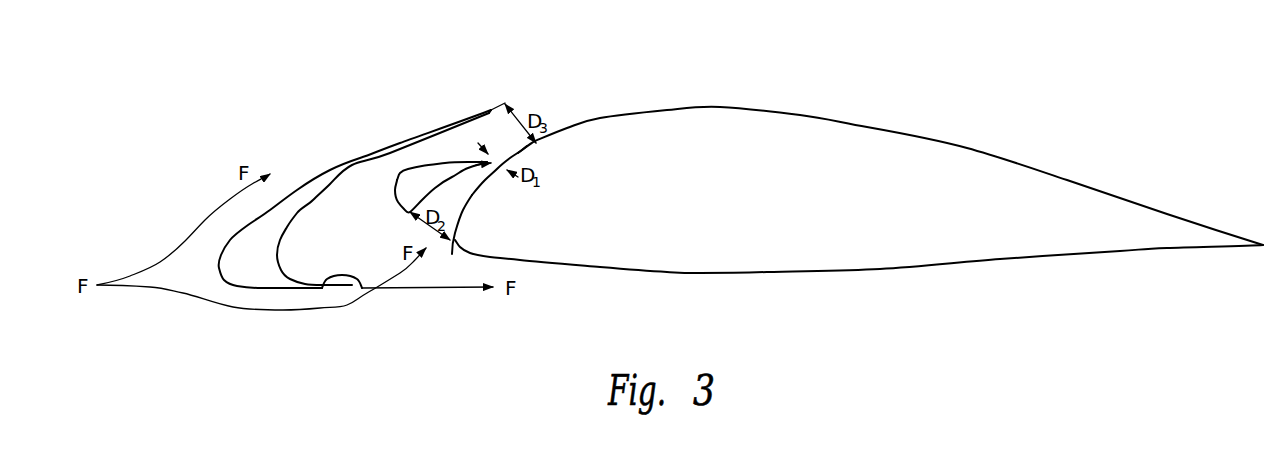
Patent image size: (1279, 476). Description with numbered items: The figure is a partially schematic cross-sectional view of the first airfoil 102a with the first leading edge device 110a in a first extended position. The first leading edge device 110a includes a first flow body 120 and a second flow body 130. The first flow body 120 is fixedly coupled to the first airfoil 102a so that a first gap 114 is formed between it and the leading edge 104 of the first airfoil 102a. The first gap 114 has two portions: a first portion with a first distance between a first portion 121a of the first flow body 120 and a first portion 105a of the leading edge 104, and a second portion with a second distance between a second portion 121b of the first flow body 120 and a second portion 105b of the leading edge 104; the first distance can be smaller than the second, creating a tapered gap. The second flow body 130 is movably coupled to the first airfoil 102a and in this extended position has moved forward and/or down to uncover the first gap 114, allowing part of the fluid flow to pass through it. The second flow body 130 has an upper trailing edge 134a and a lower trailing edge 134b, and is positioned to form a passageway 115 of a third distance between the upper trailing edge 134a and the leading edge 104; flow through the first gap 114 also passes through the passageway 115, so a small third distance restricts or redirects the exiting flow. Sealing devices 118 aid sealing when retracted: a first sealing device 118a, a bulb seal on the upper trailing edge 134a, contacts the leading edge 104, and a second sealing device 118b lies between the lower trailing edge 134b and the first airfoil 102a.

The first airfoil 102a is at (673, 275).
The leading edge 104 is at (857, 206).
The first portion of the leading edge 105a is at (504, 186).
The second portion of the leading edge 105b is at (468, 242).
The first leading edge device 110a is at (385, 191).
The first gap 114 is at (438, 247).
The passageway 115 is at (578, 108).
The sealing devices 118 is at (857, 206).
The first sealing device 118a is at (492, 111).
The second sealing device 118b is at (322, 288).
The first flow body 120 is at (397, 145).
The first portion of the first flow body 121a is at (472, 158).
The second portion of the first flow body 121b is at (404, 204).
The second flow body 130 is at (240, 257).
The upper trailing edge 134a is at (492, 106).
The lower trailing edge 134b is at (363, 288).